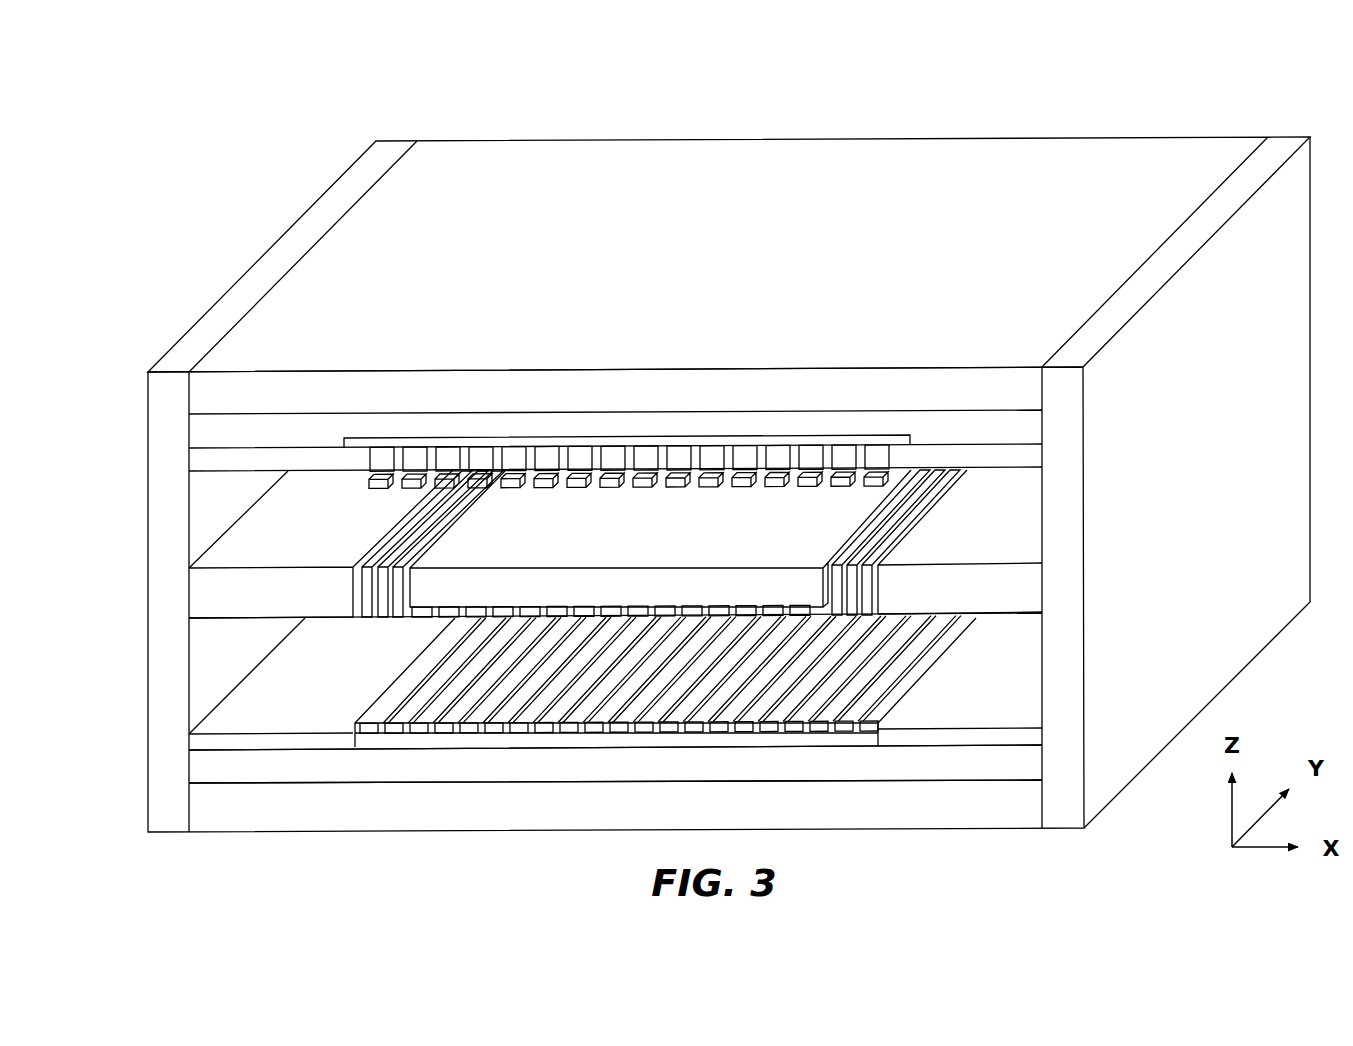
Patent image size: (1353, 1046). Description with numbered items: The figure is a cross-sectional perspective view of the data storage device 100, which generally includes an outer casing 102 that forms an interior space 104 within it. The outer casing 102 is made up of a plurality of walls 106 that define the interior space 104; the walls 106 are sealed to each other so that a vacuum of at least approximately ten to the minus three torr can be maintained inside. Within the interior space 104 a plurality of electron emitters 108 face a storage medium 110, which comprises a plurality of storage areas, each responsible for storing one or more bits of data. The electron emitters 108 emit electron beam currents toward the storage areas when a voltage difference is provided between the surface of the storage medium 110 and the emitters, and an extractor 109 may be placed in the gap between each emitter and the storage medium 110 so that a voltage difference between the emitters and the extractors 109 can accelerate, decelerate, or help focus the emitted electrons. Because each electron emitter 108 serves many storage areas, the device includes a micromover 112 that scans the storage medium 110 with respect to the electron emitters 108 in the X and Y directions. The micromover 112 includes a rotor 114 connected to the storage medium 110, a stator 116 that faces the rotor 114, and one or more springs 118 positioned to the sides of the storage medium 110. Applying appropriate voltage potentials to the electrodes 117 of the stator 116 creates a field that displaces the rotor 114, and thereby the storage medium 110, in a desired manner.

The data storage device 100 is at (1248, 123).
The outer casing 102 is at (1035, 148).
The interior space 104 is at (226, 668).
The walls 106 is at (1128, 148).
The electron emitters 108 is at (415, 446).
The extractor 109 is at (637, 491).
The storage medium 110 is at (600, 598).
The micromover 112 is at (342, 770).
The rotor 114 is at (428, 634).
The stator 116 is at (632, 738).
The electrodes 117 is at (379, 717).
The springs 118 is at (357, 544).